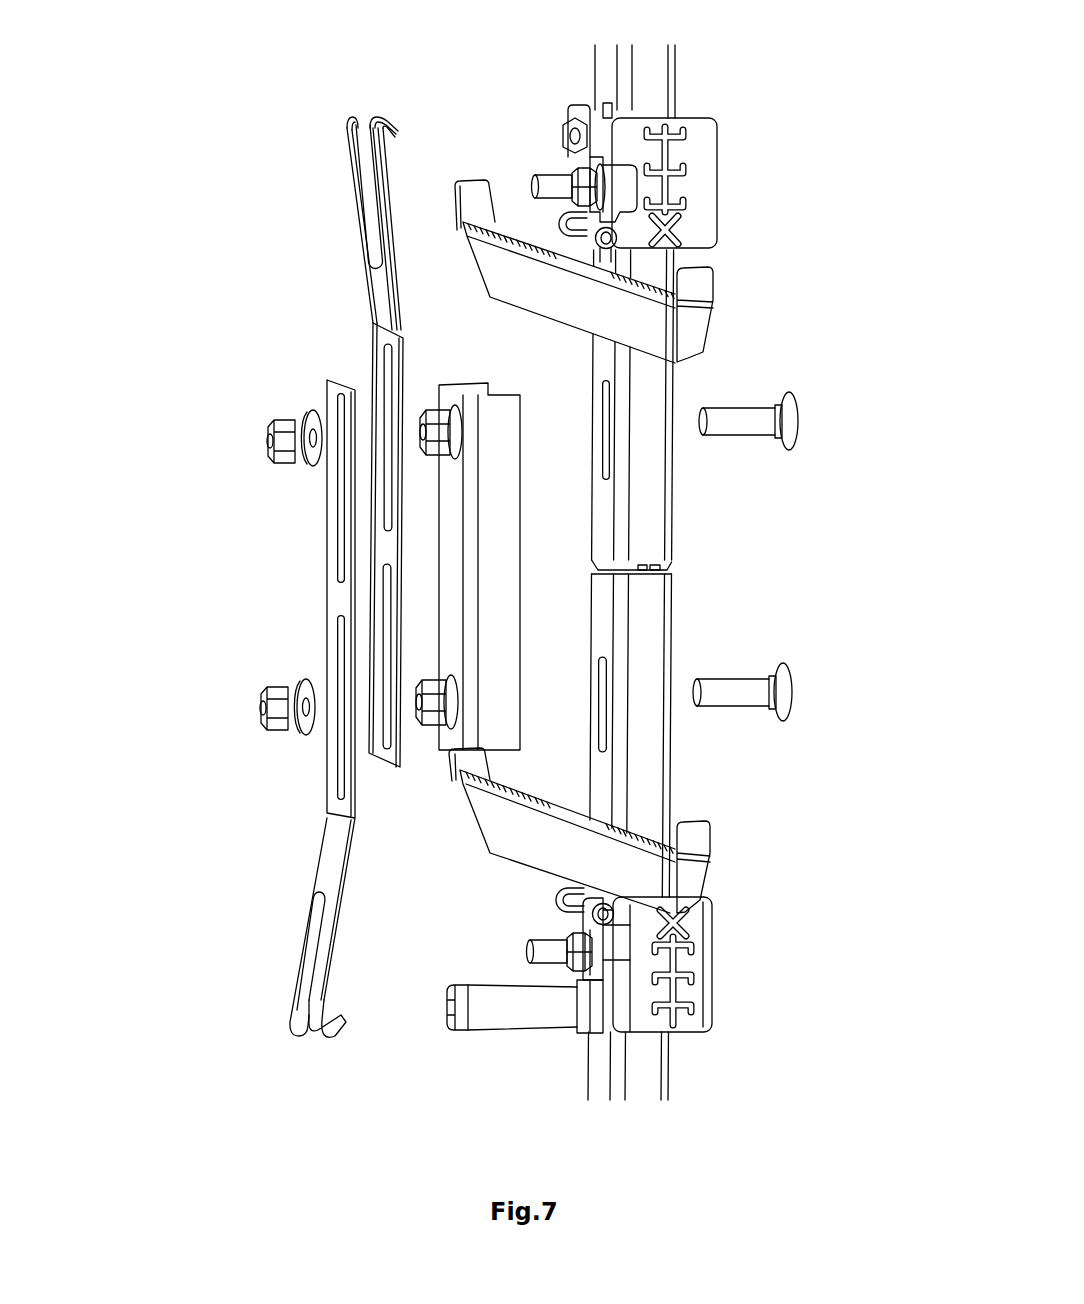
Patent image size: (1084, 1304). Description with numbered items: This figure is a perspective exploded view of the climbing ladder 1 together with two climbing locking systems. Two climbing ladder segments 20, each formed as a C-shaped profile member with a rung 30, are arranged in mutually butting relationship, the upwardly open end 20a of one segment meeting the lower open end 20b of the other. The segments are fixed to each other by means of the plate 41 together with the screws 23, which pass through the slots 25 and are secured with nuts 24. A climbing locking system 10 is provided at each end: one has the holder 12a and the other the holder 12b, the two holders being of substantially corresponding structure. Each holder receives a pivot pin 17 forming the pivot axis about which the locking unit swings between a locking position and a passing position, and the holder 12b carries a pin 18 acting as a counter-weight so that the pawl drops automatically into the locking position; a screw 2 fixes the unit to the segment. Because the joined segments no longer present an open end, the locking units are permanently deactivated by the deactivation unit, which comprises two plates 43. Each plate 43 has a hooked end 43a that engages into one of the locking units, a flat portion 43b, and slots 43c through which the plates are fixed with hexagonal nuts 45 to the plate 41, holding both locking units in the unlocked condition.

The step device 1 is at (503, 132).
The bolt 2 is at (555, 183).
The climbing locking system 10 is at (705, 115).
The holder 12a is at (707, 160).
The holder 12b is at (710, 968).
The pivot pin 17 is at (617, 238).
The pin 18 is at (507, 1015).
The climbing ladder segment 20 is at (652, 475).
The upwardly open end 20a is at (655, 580).
The lower open end 20b is at (672, 558).
The screw 23 is at (750, 416).
The nut 24 is at (436, 413).
The slot 25 is at (603, 398).
The rung 30 is at (700, 282).
The plate 41 is at (507, 543).
The plate 43 is at (319, 360).
The hooked end 43a is at (350, 110).
The flat strap section 43b is at (330, 392).
The slot 43c is at (340, 530).
The nut 45 is at (276, 484).